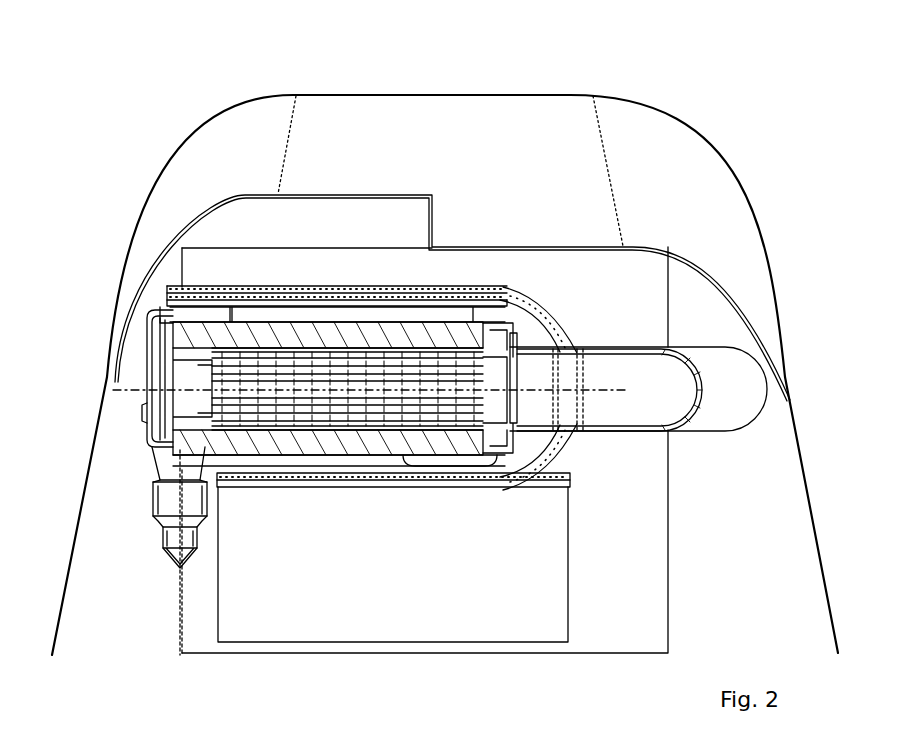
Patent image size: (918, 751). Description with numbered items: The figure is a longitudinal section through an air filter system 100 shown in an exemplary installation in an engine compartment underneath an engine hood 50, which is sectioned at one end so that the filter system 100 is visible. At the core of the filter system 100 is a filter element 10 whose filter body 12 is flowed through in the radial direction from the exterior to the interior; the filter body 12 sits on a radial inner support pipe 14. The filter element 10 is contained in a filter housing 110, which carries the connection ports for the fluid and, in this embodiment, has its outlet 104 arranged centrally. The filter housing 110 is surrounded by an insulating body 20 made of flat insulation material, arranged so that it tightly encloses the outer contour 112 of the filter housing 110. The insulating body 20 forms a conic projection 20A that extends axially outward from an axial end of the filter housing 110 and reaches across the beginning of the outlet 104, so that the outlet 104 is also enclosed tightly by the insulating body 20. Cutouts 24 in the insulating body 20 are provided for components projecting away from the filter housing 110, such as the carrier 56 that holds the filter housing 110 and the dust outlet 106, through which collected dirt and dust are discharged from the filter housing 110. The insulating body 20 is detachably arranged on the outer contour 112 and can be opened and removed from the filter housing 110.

The filter element 10 is at (380, 452).
The filter body 12 is at (293, 443).
The radial inner support pipe 14 is at (305, 344).
The insulating body 20 is at (474, 290).
The conic projection 20A is at (533, 316).
The cutouts 24 is at (157, 463).
The engine hood 50 is at (561, 95).
The carrier 56 is at (570, 488).
The filter system 100 is at (310, 272).
The outlet 104 is at (571, 350).
The dust outlet 106 is at (157, 545).
The filter housing 110 is at (513, 300).
The outer contour 112 is at (413, 298).